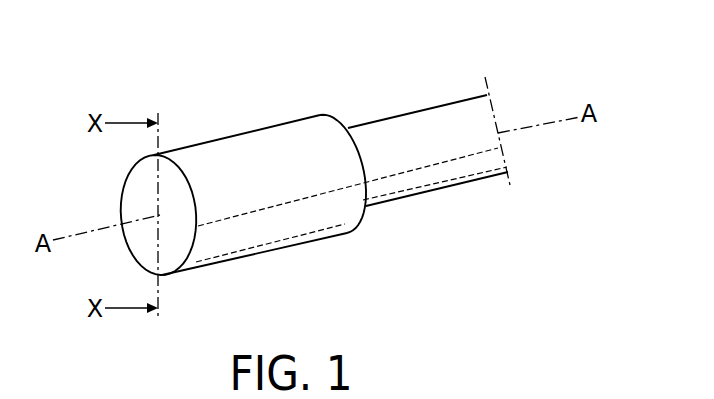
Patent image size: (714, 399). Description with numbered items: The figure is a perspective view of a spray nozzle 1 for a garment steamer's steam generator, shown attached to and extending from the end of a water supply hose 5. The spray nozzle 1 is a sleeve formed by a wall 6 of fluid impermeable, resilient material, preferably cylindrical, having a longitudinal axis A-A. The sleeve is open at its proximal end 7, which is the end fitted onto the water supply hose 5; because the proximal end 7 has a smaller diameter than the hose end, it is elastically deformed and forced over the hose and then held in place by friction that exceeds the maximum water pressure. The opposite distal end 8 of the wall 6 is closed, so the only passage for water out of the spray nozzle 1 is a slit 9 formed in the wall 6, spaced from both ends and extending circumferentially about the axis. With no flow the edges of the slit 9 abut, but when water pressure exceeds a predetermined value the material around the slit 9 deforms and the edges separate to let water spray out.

The spray nozzle 1 is at (226, 85).
The water supply hose 5 is at (408, 113).
The wall 6 is at (326, 221).
The proximal end 7 is at (362, 217).
The distal end 8 is at (125, 200).
The slit 9 is at (240, 232).